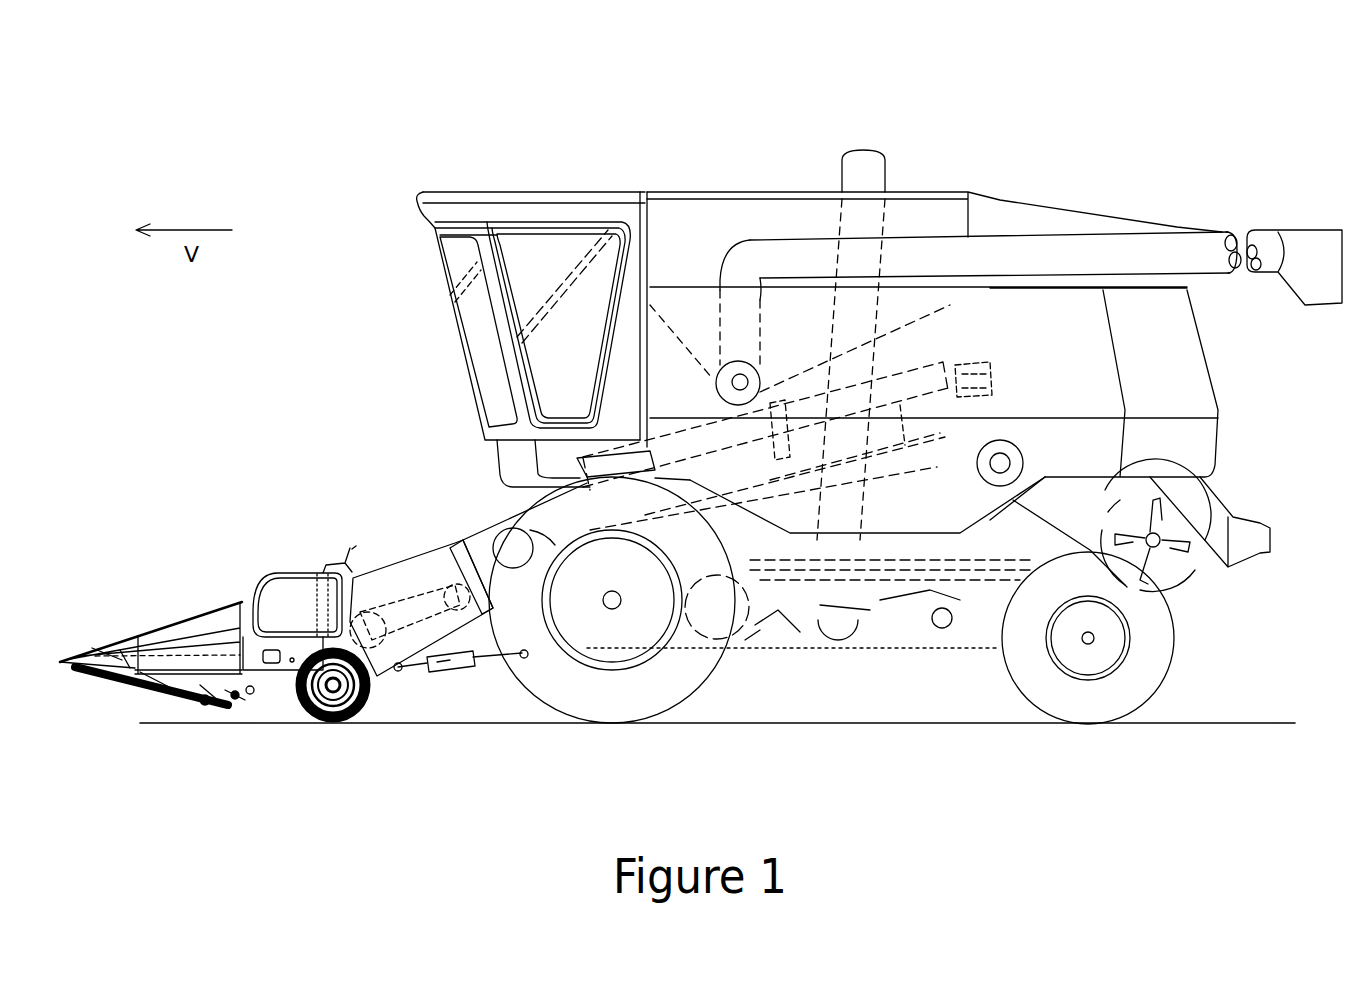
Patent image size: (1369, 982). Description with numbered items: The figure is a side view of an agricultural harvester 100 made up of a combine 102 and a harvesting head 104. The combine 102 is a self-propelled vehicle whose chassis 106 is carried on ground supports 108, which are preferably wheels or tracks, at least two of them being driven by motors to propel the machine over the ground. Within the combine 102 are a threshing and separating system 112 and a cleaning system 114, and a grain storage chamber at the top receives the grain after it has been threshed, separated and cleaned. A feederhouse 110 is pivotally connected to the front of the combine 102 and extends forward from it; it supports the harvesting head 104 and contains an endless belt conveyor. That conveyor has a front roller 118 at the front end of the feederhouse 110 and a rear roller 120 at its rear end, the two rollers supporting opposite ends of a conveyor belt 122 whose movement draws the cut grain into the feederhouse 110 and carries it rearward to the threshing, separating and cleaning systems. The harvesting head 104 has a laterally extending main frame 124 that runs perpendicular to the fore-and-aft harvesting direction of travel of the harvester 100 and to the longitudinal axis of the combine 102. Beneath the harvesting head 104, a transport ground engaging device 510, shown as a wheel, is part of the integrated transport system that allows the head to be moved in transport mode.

The agricultural harvester 100 is at (402, 70).
The combine 102 is at (722, 192).
The harvesting head 104 is at (195, 612).
The chassis 106 is at (923, 650).
The ground supports 108 is at (687, 697).
The feederhouse 110 is at (430, 555).
The threshing and separating system 112 is at (918, 365).
The cleaning system 114 is at (912, 540).
The front roller 118 is at (387, 677).
The rear roller 120 is at (467, 667).
The conveyor belt 122 is at (437, 668).
The main frame 124 is at (310, 537).
The transport ground engaging devices 510 is at (307, 710).